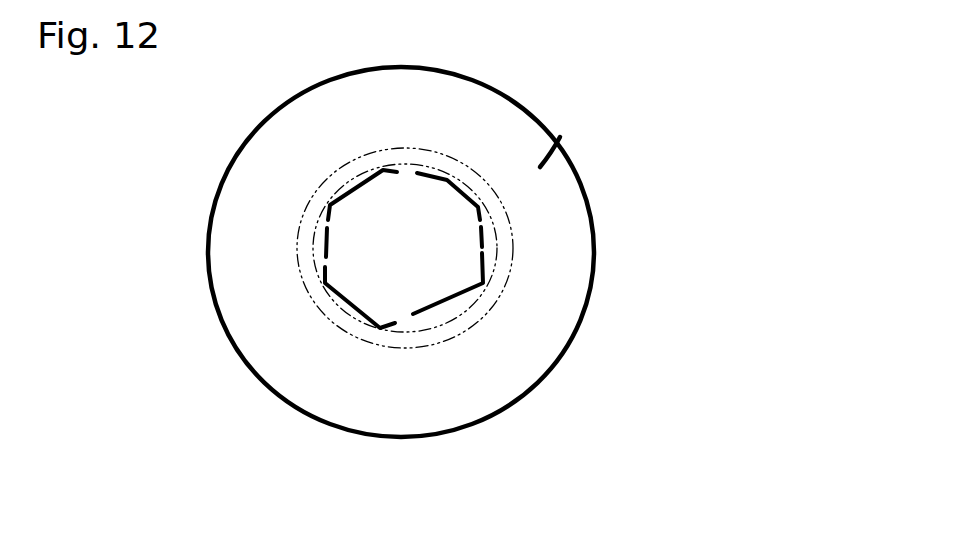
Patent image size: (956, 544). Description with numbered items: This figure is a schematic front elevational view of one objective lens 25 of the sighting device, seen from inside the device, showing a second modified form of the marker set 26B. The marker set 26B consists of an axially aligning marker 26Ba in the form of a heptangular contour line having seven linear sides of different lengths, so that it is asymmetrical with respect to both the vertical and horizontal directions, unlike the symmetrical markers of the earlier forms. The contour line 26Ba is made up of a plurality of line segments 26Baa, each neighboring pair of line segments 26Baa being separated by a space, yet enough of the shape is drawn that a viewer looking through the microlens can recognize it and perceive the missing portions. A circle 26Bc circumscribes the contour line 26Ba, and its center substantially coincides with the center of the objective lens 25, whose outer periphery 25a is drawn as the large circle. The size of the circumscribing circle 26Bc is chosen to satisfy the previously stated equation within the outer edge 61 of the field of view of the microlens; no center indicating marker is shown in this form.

The objective lens 25 is at (533, 303).
The outer peripheral surface of rotor core 25a is at (540, 168).
The outer edge of the field of view 61 is at (441, 153).
The marker set 26B is at (458, 303).
The axially aligning marker 26Ba is at (510, 467).
The line segments 26Baa is at (424, 310).
The circle 26Bc is at (358, 186).